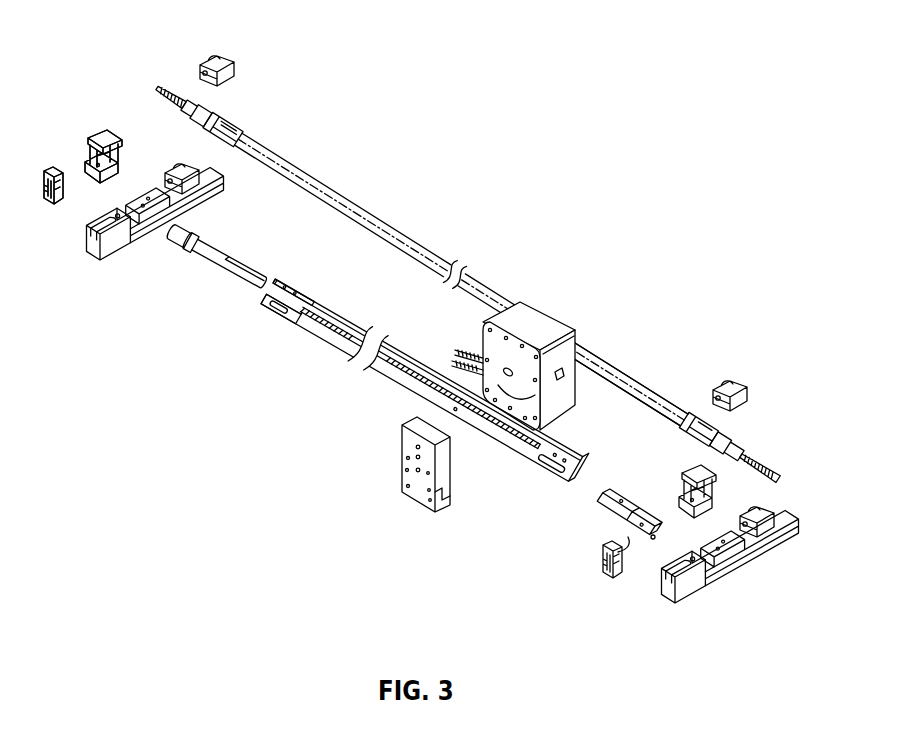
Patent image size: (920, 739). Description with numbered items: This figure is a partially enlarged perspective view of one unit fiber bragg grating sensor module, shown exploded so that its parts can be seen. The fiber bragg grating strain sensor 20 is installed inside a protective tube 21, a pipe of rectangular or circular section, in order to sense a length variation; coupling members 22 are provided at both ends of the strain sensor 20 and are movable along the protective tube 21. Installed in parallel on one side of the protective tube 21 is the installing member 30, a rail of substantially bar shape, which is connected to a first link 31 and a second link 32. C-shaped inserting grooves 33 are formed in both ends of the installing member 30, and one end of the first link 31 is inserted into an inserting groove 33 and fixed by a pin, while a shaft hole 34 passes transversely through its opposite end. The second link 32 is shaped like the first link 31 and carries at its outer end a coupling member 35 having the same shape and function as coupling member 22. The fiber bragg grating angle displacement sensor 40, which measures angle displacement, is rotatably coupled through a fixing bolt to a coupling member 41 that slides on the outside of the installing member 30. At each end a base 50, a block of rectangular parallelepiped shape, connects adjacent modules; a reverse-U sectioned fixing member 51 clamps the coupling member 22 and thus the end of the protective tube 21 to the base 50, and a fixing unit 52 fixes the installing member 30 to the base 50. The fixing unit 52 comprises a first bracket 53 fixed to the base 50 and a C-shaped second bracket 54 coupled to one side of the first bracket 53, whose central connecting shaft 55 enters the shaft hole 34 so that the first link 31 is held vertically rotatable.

The fiber bragg grating strain sensor 20 is at (469, 281).
The protective tube 21 is at (640, 385).
The coupling member 22 is at (730, 438).
The installing member 30 is at (424, 381).
The first link 31 is at (607, 510).
The second link 32 is at (214, 271).
The inserting groove 33 is at (292, 320).
The shaft hole 34 is at (653, 540).
The coupling member 35 is at (193, 243).
The fiber bragg grating angle displacement sensor 40 is at (533, 320).
The coupling member 41 is at (417, 500).
The base 50 is at (115, 257).
The fixing member 51 is at (202, 59).
The fixing unit 52 is at (63, 87).
The first bracket 53 is at (98, 133).
The second bracket 54 is at (52, 167).
The connecting shaft 55 is at (628, 537).